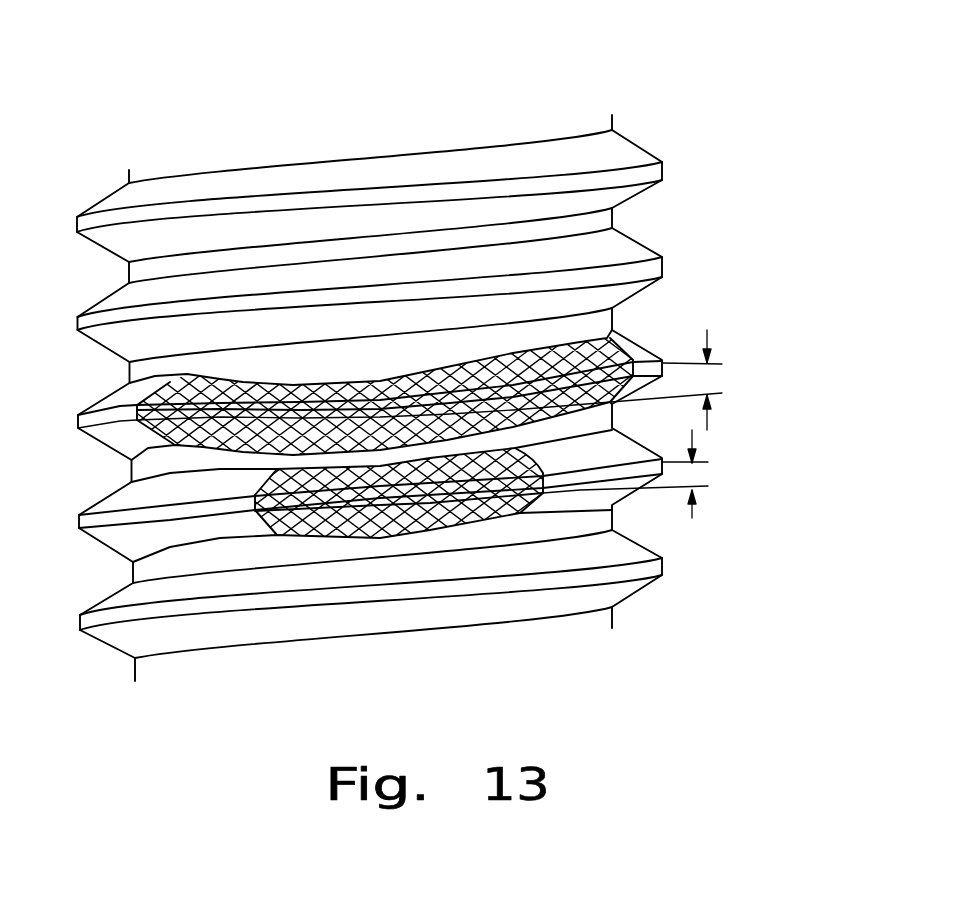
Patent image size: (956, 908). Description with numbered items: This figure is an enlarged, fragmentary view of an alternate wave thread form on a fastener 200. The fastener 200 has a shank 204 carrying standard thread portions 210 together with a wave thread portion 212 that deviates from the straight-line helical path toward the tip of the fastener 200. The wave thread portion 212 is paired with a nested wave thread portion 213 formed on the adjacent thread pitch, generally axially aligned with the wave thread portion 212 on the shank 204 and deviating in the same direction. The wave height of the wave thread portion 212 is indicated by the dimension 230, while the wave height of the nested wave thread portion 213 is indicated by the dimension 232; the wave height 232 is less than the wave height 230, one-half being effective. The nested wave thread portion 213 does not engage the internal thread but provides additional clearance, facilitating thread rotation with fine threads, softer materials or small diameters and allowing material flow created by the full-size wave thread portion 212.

The fastener 200 is at (201, 141).
The shank 204 is at (613, 617).
The standard thread portions 210 is at (630, 253).
The wave thread portion 212 is at (603, 362).
The nested wave thread portion 213 is at (362, 522).
The wave height 230 is at (707, 382).
The wave height 232 is at (693, 473).